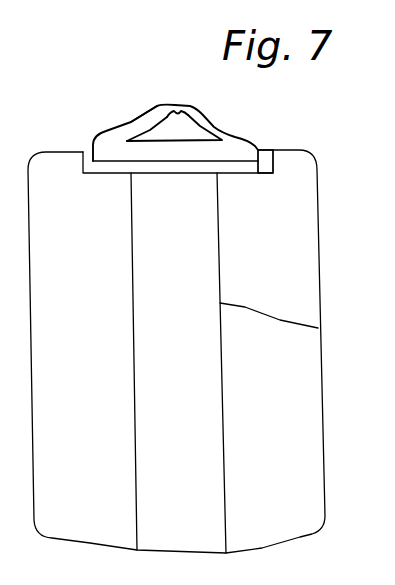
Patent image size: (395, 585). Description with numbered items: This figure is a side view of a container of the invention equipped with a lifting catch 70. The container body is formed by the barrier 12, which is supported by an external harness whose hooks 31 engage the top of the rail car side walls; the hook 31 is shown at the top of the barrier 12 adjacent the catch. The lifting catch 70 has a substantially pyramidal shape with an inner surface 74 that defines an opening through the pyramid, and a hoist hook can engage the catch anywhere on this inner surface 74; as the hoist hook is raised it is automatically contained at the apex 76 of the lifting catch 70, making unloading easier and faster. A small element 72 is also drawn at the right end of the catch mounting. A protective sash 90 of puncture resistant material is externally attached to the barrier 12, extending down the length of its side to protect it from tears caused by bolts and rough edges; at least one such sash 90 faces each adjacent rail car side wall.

The barrier 12 is at (282, 265).
The hook 31 is at (260, 175).
The lifting catch 70 is at (210, 110).
The bracket tab 72 is at (268, 152).
The inner surface 74 is at (147, 128).
The apex 76 is at (177, 105).
The protective sash 90 is at (318, 328).